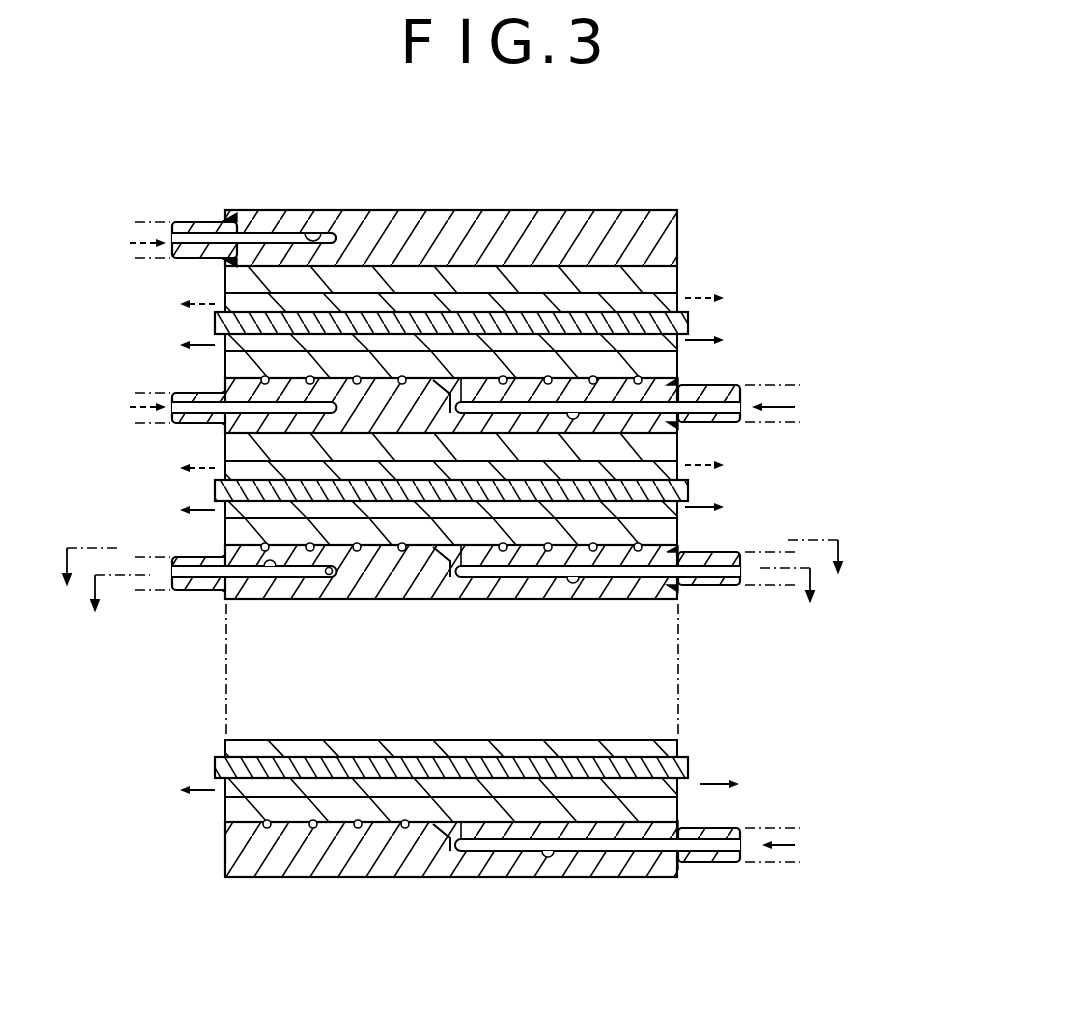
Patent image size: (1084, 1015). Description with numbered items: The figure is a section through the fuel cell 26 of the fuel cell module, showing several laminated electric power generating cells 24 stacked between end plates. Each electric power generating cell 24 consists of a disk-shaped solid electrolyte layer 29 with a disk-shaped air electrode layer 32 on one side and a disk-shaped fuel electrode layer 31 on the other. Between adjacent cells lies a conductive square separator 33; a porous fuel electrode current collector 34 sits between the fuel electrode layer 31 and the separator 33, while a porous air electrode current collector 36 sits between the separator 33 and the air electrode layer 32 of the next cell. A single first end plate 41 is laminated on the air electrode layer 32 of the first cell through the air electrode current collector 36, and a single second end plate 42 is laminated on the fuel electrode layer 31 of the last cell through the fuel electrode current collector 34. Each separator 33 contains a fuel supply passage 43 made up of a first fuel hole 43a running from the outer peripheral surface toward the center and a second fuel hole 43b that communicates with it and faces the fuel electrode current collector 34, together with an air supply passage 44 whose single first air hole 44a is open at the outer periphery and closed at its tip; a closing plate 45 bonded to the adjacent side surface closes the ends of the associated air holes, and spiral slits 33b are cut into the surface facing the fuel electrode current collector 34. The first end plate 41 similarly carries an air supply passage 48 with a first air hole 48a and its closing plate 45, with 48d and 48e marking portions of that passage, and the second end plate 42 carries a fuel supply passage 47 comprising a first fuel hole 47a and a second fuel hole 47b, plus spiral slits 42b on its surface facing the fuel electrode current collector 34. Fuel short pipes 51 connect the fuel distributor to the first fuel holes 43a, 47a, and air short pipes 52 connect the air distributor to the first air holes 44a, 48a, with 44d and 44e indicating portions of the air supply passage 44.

The fuel cell 26 is at (163, 151).
The air short pipe 52 is at (188, 221).
The closing plate 45 is at (222, 212).
The air supply passage 48 is at (291, 231).
The first air hole 48a is at (349, 184).
The air passage hole 48d is at (314, 230).
The air passage end 48e is at (336, 233).
The first end plate 41 is at (466, 205).
The electric power generating cell 24 is at (451, 461).
The air electrode layer 32 is at (532, 297).
The solid electrolyte layer 29 is at (590, 318).
The fuel electrode layer 31 is at (627, 345).
The air electrode current collector 36 is at (680, 272).
The fuel electrode current collector 34 is at (680, 366).
The fuel short pipe 51 is at (736, 386).
The separator 33 is at (470, 641).
The slit 33b is at (263, 379).
The air supply passage 44 is at (345, 582).
The first air hole 44a is at (290, 623).
The air passage hole 44d is at (269, 577).
The air passage end 44e is at (326, 578).
The fuel supply passage 43 is at (578, 642).
The second fuel hole 43b is at (460, 582).
The first fuel hole 43a is at (562, 580).
The second end plate 42 is at (440, 885).
The slit 42b is at (263, 830).
The fuel supply passage 47 is at (597, 889).
The second fuel hole 47b is at (462, 845).
The first fuel hole 47a is at (551, 885).